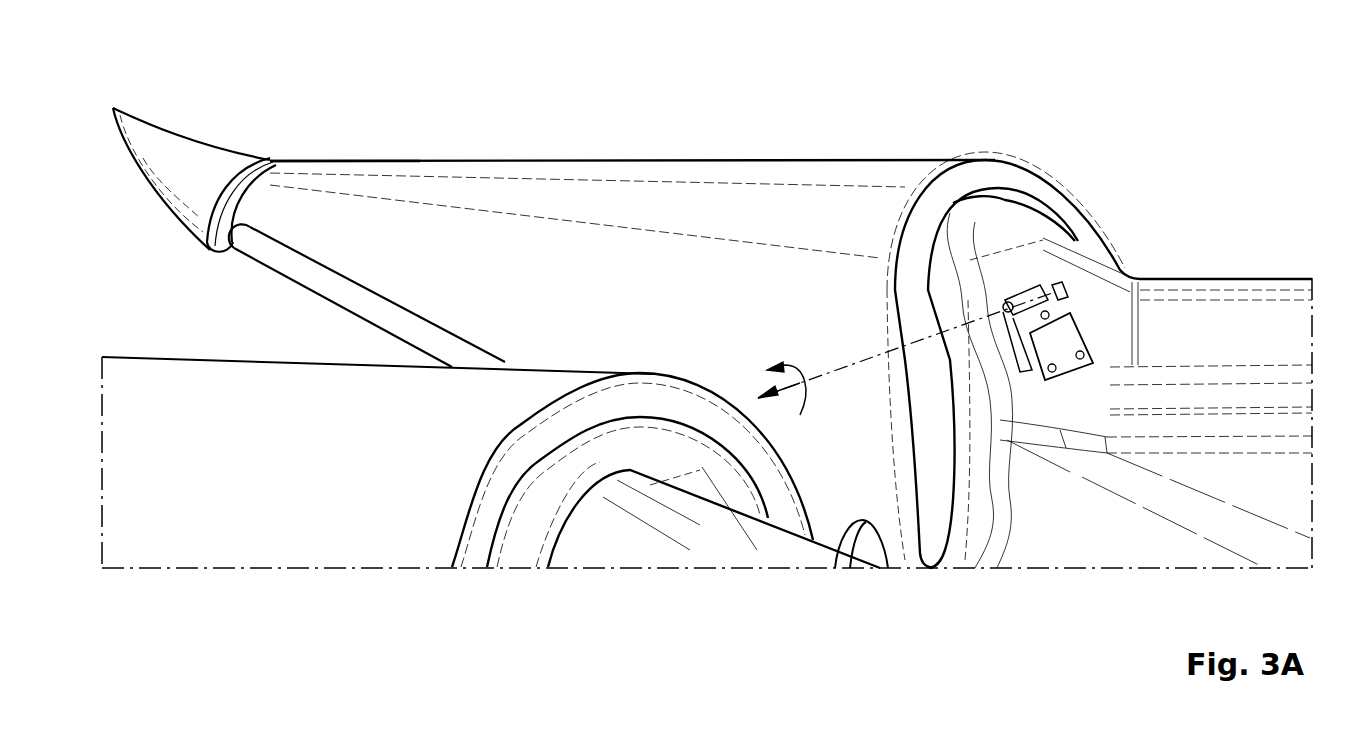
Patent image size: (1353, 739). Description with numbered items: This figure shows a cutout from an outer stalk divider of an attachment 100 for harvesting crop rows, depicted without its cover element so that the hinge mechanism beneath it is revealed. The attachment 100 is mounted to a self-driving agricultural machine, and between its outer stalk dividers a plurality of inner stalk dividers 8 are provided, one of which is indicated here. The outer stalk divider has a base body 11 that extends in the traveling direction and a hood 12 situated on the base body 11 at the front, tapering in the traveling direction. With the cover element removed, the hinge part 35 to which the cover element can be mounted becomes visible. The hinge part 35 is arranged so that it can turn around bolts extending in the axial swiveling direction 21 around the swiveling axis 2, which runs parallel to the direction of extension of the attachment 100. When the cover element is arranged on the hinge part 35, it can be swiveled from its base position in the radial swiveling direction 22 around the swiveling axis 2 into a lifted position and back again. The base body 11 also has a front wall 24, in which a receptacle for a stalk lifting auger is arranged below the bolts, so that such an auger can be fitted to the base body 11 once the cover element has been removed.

The attachment 100 is at (582, 134).
The hood 12 is at (810, 170).
The front wall 24 is at (1003, 232).
The hinge part 35 is at (1075, 330).
The base body 11 is at (1245, 290).
The radial swiveling direction 22 is at (797, 390).
The swiveling axis 2 is at (852, 360).
The axial swiveling direction 21 is at (792, 395).
The inner stalk divider 8 is at (292, 562).